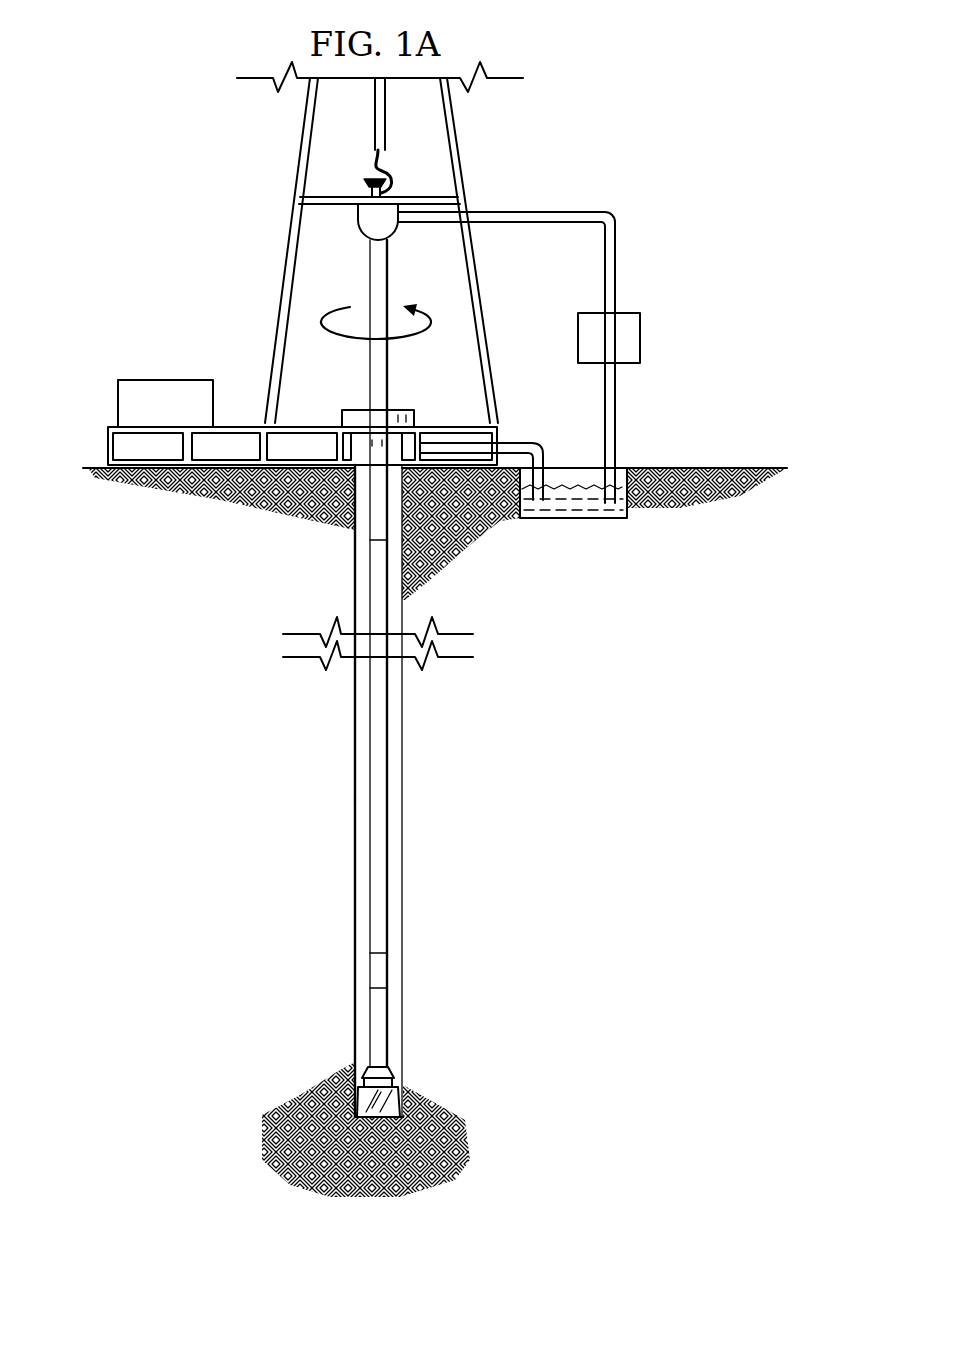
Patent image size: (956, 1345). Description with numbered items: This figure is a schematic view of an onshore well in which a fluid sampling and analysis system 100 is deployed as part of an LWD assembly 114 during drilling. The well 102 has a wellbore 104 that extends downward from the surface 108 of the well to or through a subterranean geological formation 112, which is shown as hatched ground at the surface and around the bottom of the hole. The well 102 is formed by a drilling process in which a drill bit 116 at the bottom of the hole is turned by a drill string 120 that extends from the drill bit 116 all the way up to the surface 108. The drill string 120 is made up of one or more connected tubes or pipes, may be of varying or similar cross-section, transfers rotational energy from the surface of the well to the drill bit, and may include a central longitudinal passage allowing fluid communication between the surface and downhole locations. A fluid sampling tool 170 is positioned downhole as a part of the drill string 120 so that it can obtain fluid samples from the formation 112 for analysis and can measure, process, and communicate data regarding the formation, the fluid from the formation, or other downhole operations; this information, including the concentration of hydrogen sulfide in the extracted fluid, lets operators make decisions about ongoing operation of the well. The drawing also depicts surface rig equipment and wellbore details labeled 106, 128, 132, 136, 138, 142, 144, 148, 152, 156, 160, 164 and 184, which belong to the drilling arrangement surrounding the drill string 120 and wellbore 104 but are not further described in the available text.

The fluid sampling and analysis system 100 is at (220, 226).
The well 102 is at (410, 395).
The wellbore 104 is at (355, 786).
The wellbore wall 106 is at (402, 796).
The surface 108 is at (722, 466).
The subterranean geological formation 112 is at (262, 1157).
The LWD assembly 114 is at (405, 742).
The drill bit 116 is at (403, 1092).
The drill string 120 is at (370, 728).
The pipe joint 128 is at (376, 530).
The top drive 132 is at (366, 238).
The rotary table 136 is at (358, 410).
The swivel 138 is at (398, 176).
The hoisting cable 142 is at (373, 137).
The mud pit 144 is at (567, 521).
The drilling fluid 148 is at (555, 487).
The supply line 152 is at (563, 210).
The mud pump 156 is at (640, 338).
The annulus 160 is at (366, 812).
The return line 164 is at (510, 436).
The fluid sampling tool 170 is at (378, 970).
The control unit 184 is at (165, 379).